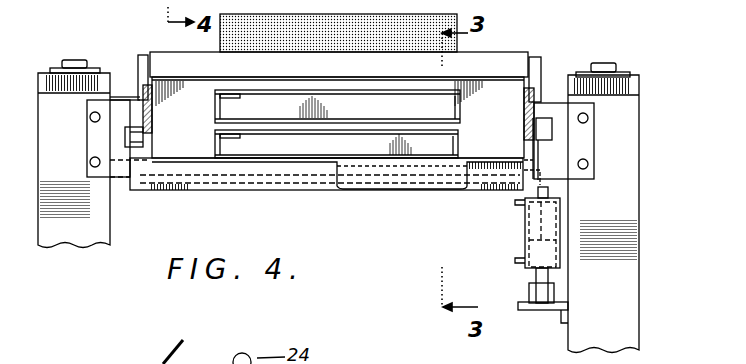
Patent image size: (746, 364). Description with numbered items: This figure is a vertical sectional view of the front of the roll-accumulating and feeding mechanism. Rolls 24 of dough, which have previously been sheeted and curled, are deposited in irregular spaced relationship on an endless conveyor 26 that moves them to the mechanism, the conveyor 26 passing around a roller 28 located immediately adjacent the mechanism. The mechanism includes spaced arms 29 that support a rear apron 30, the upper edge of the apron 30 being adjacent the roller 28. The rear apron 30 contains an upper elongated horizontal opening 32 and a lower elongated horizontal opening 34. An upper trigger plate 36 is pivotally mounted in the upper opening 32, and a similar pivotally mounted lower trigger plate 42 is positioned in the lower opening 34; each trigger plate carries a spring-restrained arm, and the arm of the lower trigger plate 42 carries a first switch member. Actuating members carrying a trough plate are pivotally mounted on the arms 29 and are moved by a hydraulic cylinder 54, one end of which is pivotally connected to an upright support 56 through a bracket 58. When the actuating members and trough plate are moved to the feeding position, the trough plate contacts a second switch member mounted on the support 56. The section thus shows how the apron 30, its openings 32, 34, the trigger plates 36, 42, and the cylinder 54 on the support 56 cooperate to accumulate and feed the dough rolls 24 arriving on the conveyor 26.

The rolls of dough 24 is at (303, 25).
The endless conveyor 26 is at (486, 62).
The roller 28 is at (144, 55).
The spaced arms 29 is at (147, 112).
The rear apron 30 is at (537, 82).
The upper elongated horizontal opening 32 is at (460, 111).
The lower elongated horizontal opening 34 is at (458, 155).
The upper trigger plate 36 is at (323, 108).
The lower trigger plate 42 is at (356, 163).
The hydraulic cylinder 54 is at (551, 220).
The upright support 56 is at (618, 273).
The bracket 58 is at (536, 305).